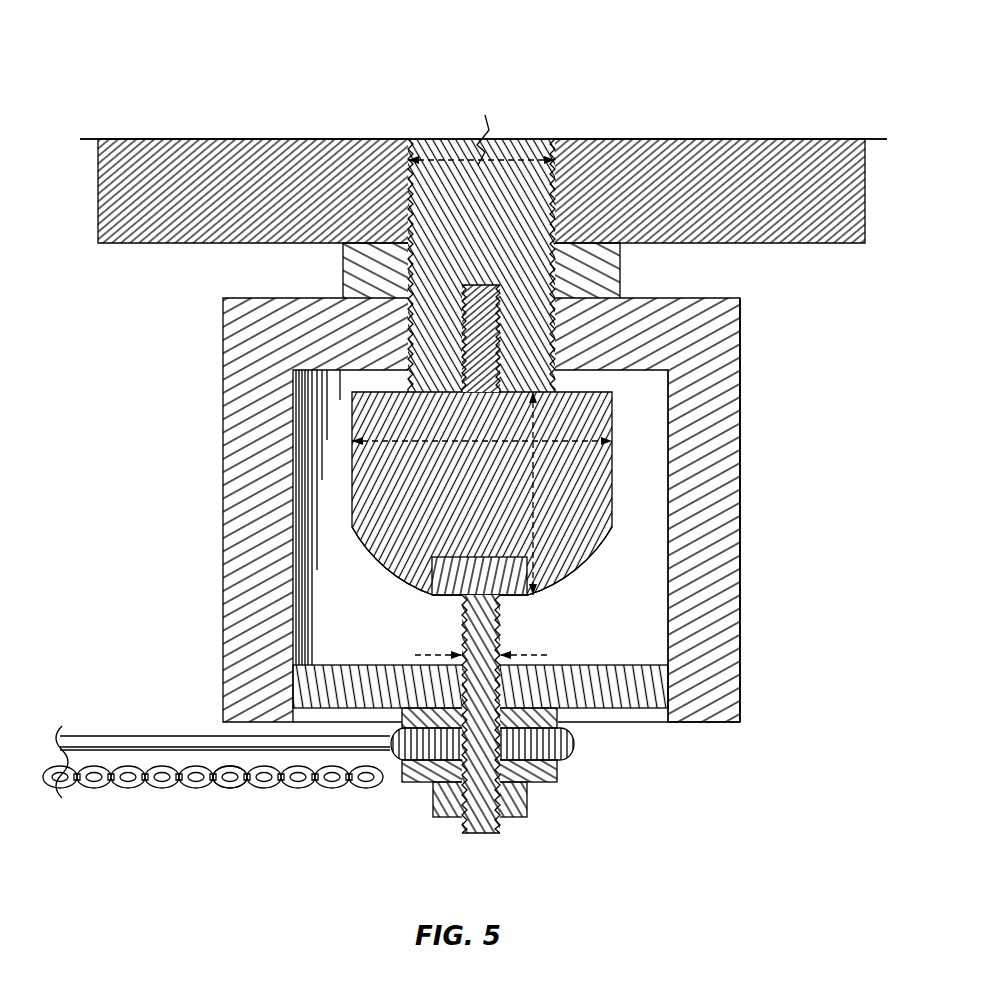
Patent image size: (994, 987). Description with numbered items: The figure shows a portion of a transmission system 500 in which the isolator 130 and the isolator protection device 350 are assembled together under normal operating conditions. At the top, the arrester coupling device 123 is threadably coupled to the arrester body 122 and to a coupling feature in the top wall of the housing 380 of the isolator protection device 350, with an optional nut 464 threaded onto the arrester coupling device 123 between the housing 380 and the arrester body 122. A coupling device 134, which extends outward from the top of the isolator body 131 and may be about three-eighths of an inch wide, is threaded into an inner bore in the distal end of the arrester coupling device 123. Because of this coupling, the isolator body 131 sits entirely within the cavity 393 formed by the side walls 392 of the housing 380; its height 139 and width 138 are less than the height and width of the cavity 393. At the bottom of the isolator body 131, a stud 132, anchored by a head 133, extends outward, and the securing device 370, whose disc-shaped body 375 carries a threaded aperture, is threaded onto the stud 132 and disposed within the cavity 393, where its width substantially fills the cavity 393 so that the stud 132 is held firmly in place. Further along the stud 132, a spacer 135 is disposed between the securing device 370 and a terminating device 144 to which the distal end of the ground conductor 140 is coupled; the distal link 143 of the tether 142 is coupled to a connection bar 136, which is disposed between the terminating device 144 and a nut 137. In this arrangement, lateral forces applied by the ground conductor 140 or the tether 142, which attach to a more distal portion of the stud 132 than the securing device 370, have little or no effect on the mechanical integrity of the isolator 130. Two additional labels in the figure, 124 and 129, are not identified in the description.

The transmission system 500 is at (794, 65).
The arrester body 122 is at (731, 203).
The arrester coupling device 123 is at (443, 190).
The bore width 124 is at (507, 158).
The coupling device 134 is at (485, 284).
The nut 464 is at (620, 286).
The housing 380 is at (221, 567).
The isolator protection device 350 is at (758, 512).
The side walls 392 is at (725, 558).
The cavity 393 is at (420, 639).
The body 375 is at (602, 699).
The securing device 370 is at (648, 713).
The isolator body 131 is at (502, 503).
The width 138 is at (428, 444).
The height 139 is at (533, 547).
The head 133 is at (501, 588).
The isolator 130 is at (364, 565).
The stud 132 is at (488, 622).
The shaft diameter 129 is at (525, 655).
The spacer 135 is at (558, 716).
The terminating device 144 is at (572, 745).
The connection bar 136 is at (558, 771).
The nut 137 is at (527, 800).
The ground conductor 140 is at (165, 735).
The tether 142 is at (160, 792).
The distal link 143 is at (236, 790).